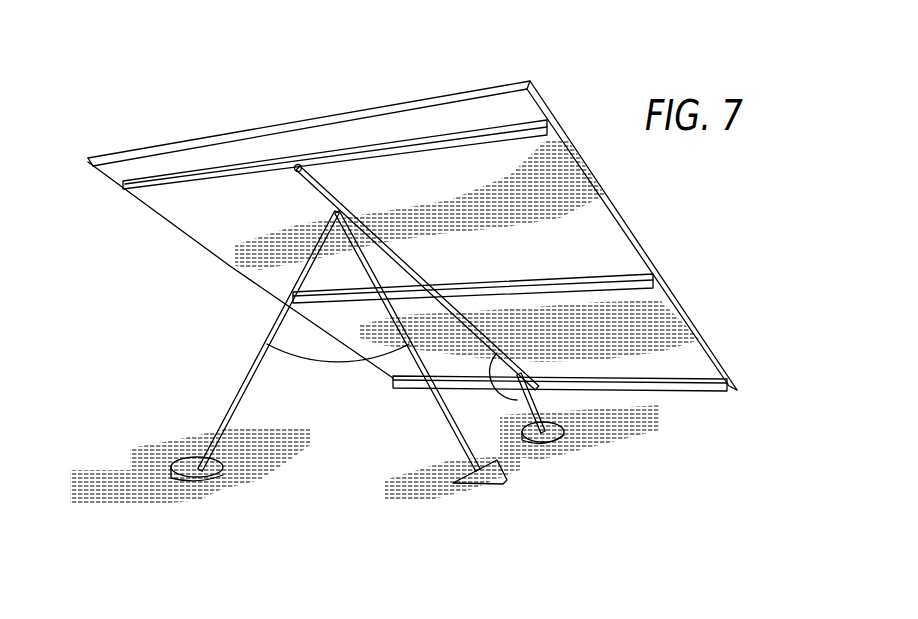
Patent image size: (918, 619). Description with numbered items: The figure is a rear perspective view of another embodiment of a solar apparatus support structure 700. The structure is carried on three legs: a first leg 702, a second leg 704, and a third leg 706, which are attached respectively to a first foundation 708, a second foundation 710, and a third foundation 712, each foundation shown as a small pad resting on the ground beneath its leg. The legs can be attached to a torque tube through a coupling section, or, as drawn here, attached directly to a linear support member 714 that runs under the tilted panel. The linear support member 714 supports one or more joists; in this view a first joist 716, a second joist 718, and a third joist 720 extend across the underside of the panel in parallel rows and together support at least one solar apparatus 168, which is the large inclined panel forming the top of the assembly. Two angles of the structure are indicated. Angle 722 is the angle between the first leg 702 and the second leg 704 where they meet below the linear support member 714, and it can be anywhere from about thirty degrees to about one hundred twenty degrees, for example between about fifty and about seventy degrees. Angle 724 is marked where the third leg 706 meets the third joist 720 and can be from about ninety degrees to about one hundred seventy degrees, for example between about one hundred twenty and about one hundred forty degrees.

The solar apparatus support structure 700 is at (568, 93).
The solar apparatus 168 is at (598, 236).
The first leg 702 is at (240, 385).
The second leg 704 is at (453, 432).
The third leg 706 is at (540, 410).
The first foundation 708 is at (183, 465).
The second foundation 710 is at (487, 481).
The third foundation 712 is at (560, 440).
The linear support member 714 is at (300, 173).
The first joist 716 is at (463, 137).
The second joist 718 is at (643, 270).
The third joist 720 is at (695, 373).
The angle 722 is at (316, 366).
The angle 724 is at (512, 393).